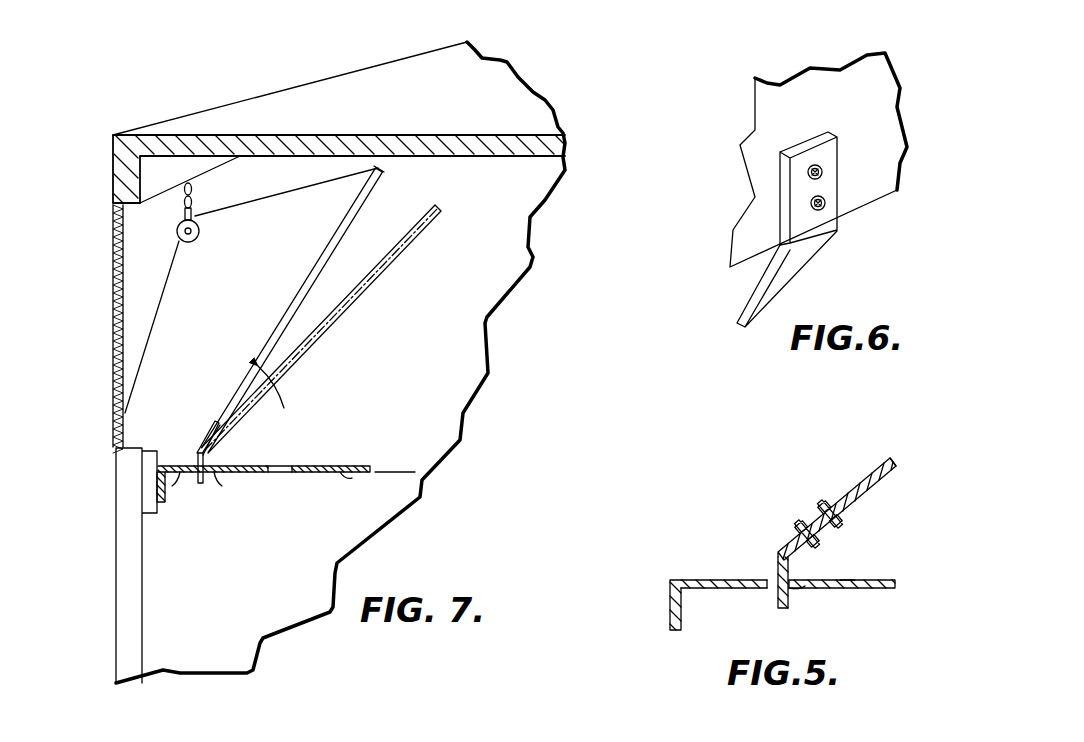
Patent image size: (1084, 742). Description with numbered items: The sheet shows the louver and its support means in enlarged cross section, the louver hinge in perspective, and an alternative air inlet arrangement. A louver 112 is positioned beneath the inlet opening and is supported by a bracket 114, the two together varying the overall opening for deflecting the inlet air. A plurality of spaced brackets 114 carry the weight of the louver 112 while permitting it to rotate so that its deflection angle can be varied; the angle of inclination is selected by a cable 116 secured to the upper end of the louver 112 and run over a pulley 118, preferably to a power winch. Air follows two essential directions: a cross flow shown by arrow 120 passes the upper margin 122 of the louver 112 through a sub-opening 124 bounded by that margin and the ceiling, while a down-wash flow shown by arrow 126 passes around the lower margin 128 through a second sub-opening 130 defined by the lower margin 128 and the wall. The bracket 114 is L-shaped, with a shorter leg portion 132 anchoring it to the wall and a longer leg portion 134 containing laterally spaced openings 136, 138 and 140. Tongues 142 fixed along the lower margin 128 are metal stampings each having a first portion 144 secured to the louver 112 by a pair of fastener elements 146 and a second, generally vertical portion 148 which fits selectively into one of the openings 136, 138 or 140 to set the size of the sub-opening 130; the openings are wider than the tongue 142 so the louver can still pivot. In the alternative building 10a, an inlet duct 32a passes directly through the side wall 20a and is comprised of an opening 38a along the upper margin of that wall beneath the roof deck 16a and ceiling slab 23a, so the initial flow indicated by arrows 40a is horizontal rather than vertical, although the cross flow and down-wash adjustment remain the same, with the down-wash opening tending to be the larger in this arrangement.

In FIG. 7, the building 10a is at (264, 72).
In FIG. 7, the roof deck 16a is at (400, 58).
In FIG. 7, the slab 23a is at (483, 151).
In FIG. 7, the opening 38a is at (131, 205).
In FIG. 7, the inlet duct 32a is at (107, 250).
In FIG. 7, the arrows 40a is at (138, 284).
In FIG. 7, the side wall 20a is at (127, 603).
In FIG. 7, the cable 116 is at (266, 200).
In FIG. 7, the pulley 118 is at (200, 232).
In FIG. 7, the arrow 120 is at (153, 262).
In FIG. 7, the upper margin 122 is at (384, 169).
In FIG. 7, the sub-opening 124 is at (357, 162).
In FIG. 7, the arrow 126 is at (179, 446).
In FIG. 7, the louver 112 is at (293, 300).
In FIG. 6, the louver 112 is at (878, 73).
In FIG. 5, the louver 112 is at (895, 467).
In FIG. 7, the bracket 114 is at (355, 466).
In FIG. 5, the bracket 114 is at (767, 567).
In FIG. 7, the lower margin 128 is at (214, 456).
In FIG. 7, the sub-opening 130 is at (270, 467).
In FIG. 7, the shorter leg portion 132 is at (170, 506).
In FIG. 5, the shorter leg portion 132 is at (670, 605).
In FIG. 7, the longer leg portion 134 is at (302, 471).
In FIG. 5, the longer leg portion 134 is at (882, 590).
In FIG. 7, the opening 136 is at (196, 475).
In FIG. 5, the opening 136 is at (722, 592).
In FIG. 5, the opening 138 is at (790, 592).
In FIG. 7, the opening 140 is at (346, 475).
In FIG. 5, the opening 140 is at (847, 579).
In FIG. 7, the tongue 142 is at (205, 441).
In FIG. 6, the tongue 142 is at (842, 206).
In FIG. 5, the tongue 142 is at (831, 546).
In FIG. 7, the first portion 144 is at (218, 428).
In FIG. 6, the first portion 144 is at (820, 152).
In FIG. 5, the first portion 144 is at (828, 509).
In FIG. 6, the fastener elements 146 is at (823, 200).
In FIG. 5, the fastener elements 146 is at (793, 538).
In FIG. 7, the second portion 148 is at (206, 477).
In FIG. 6, the second portion 148 is at (788, 290).
In FIG. 5, the second portion 148 is at (782, 609).